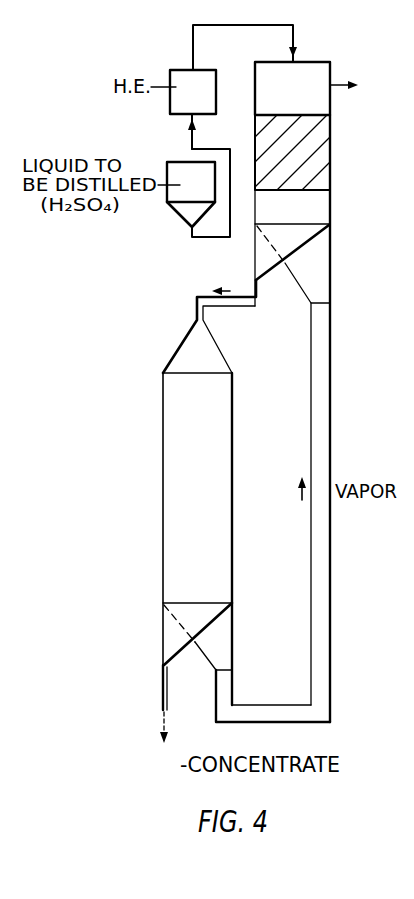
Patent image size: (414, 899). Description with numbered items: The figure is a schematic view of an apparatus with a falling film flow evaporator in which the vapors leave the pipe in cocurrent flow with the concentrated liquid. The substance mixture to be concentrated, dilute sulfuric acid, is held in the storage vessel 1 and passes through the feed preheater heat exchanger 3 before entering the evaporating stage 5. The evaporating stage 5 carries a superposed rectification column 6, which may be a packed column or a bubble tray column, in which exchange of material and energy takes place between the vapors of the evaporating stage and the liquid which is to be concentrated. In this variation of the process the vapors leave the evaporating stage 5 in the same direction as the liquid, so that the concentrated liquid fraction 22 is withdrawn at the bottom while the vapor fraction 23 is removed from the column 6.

The storage vessel 1 is at (181, 170).
The feed preheater heat exchanger 3 is at (181, 78).
The evaporating stage 5 is at (222, 422).
The rectification column 6 is at (323, 162).
The liquid fraction 22 is at (165, 721).
The vapor fraction 23 is at (320, 88).